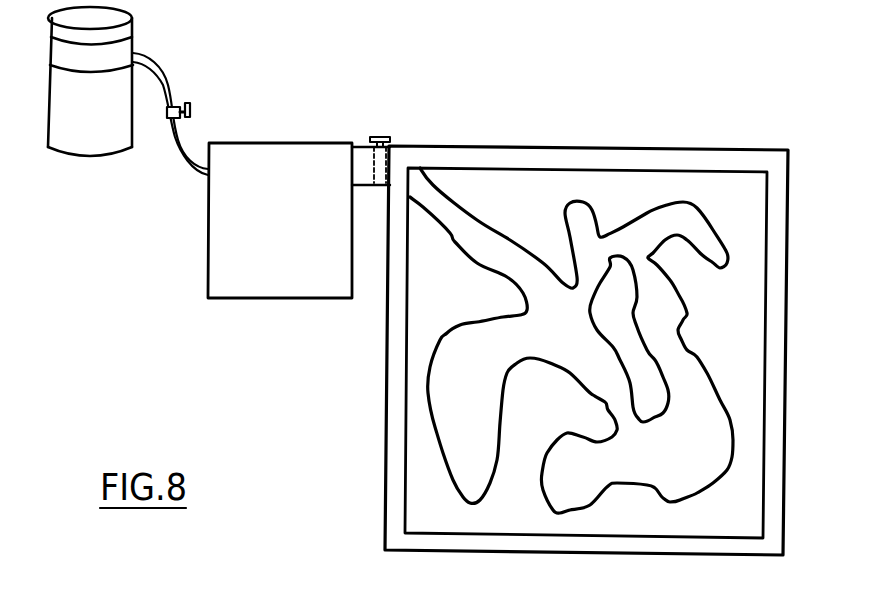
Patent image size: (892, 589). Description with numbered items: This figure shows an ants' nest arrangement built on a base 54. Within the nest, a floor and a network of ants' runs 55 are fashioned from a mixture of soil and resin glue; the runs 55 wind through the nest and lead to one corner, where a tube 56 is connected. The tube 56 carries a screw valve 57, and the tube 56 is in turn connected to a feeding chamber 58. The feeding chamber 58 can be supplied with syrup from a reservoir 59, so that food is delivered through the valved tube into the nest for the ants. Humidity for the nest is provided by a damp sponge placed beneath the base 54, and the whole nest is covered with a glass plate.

The base 54 is at (757, 215).
The runs 55 is at (693, 218).
The tube 56 is at (362, 150).
The screw valve 57 is at (397, 137).
The feeding chamber 58 is at (282, 288).
The reservoir 59 is at (110, 145).